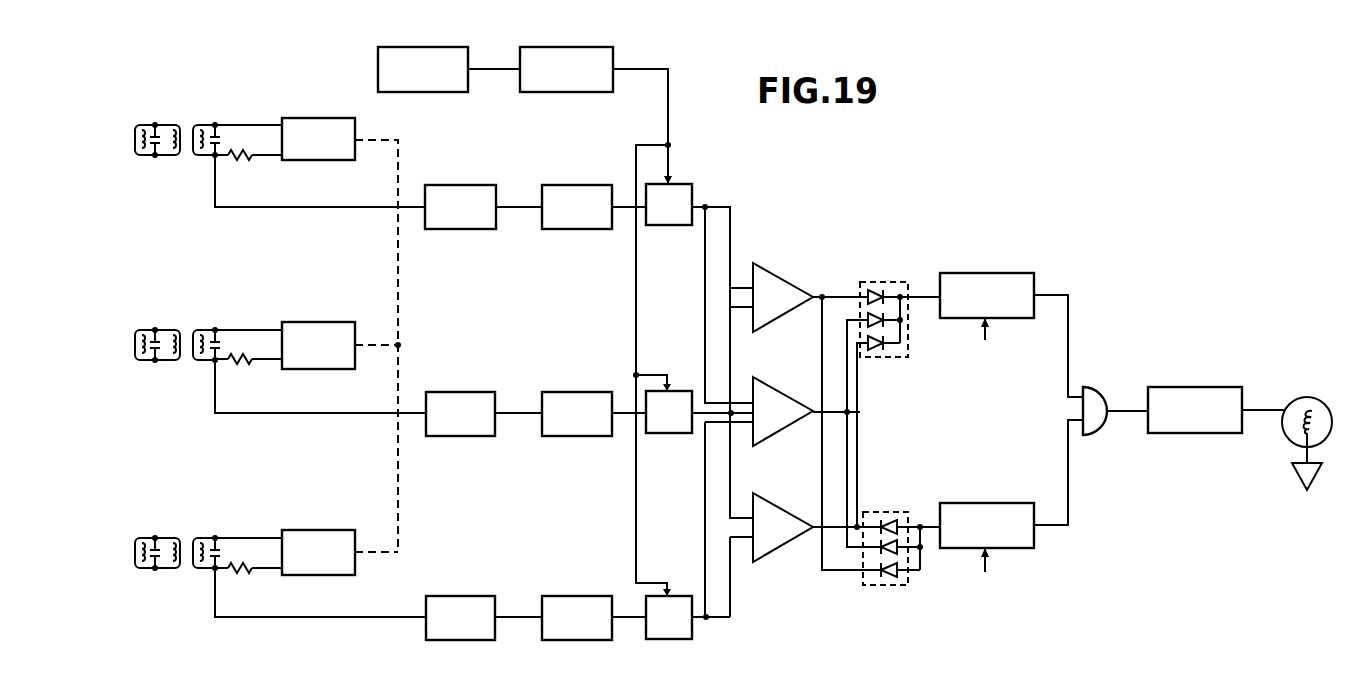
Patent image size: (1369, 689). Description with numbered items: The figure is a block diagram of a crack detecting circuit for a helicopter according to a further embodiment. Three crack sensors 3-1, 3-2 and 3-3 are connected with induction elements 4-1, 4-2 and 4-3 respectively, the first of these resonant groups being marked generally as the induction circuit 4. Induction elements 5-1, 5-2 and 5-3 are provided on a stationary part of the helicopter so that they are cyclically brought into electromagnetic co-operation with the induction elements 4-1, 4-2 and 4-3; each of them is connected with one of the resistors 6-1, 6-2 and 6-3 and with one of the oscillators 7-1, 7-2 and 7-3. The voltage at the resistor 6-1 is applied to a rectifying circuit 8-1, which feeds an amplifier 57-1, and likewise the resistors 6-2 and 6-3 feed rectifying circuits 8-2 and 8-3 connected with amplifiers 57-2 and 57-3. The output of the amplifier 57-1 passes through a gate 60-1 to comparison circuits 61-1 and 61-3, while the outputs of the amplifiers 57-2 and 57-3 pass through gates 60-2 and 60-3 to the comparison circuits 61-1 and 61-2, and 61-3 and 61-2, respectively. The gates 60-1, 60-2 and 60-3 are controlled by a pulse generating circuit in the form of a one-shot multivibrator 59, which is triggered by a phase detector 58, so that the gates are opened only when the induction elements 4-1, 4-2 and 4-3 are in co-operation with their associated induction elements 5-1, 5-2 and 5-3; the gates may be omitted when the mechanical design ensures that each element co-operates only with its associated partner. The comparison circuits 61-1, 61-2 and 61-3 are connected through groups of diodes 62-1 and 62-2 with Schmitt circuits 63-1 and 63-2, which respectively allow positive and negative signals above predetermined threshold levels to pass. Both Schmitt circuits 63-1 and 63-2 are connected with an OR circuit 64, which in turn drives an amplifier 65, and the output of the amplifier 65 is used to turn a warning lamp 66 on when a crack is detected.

The crack sensor 3-1 is at (135, 142).
The crack sensor 3-2 is at (135, 346).
The crack sensor 3-3 is at (135, 553).
The resonance circuit 4 is at (131, 128).
The induction element 4-1 is at (178, 126).
The induction element 4-2 is at (178, 330).
The induction element 4-3 is at (178, 538).
The induction element 5-1 is at (197, 127).
The induction element 5-2 is at (198, 331).
The induction element 5-3 is at (198, 540).
The resistor 6-1 is at (241, 160).
The resistor 6-2 is at (241, 364).
The resistor 6-3 is at (241, 573).
The oscillator 7-1 is at (299, 121).
The oscillator 7-2 is at (299, 328).
The oscillator 7-3 is at (296, 537).
The rectifying circuit 8-1 is at (450, 223).
The rectifying circuit 8-2 is at (450, 427).
The rectifying circuit 8-3 is at (450, 632).
The amplifier 57-1 is at (562, 223).
The amplifier 57-2 is at (562, 427).
The amplifier 57-3 is at (562, 632).
The phase detector 58 is at (406, 87).
The one-shot multivibrator 59 is at (551, 87).
The gate 60-1 is at (679, 192).
The gate 60-2 is at (668, 433).
The gate 60-3 is at (672, 639).
The comparison circuit 61-1 is at (782, 281).
The comparison circuit 61-2 is at (781, 519).
The comparison circuit 61-3 is at (781, 399).
The diodes 62-1 is at (880, 282).
The diodes 62-2 is at (883, 512).
The Schmitt circuit 63-1 is at (972, 309).
The Schmitt circuit 63-2 is at (972, 539).
The OR circuit 64 is at (1100, 433).
The amplifier 65 is at (1186, 425).
The warning lamp 66 is at (1324, 408).